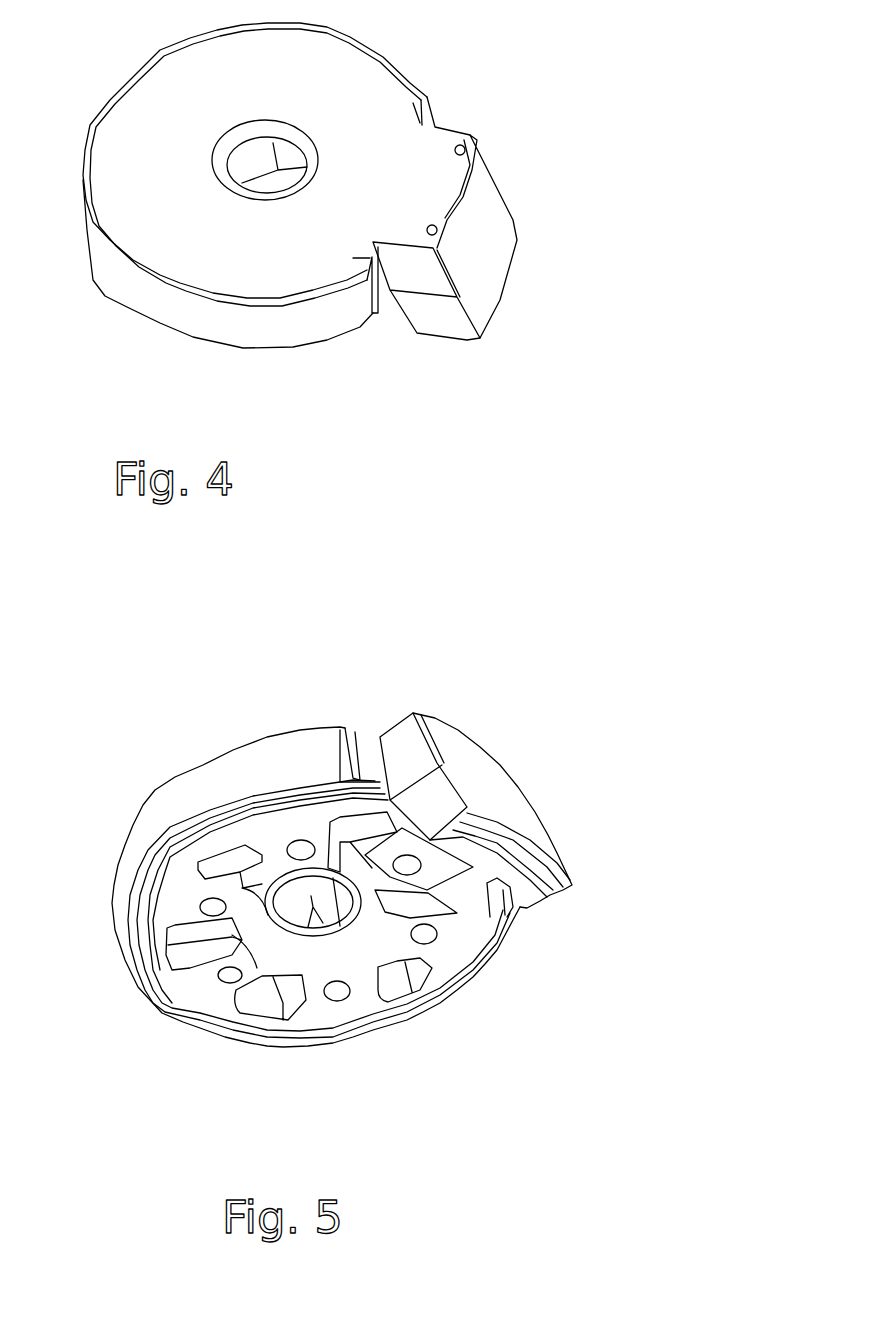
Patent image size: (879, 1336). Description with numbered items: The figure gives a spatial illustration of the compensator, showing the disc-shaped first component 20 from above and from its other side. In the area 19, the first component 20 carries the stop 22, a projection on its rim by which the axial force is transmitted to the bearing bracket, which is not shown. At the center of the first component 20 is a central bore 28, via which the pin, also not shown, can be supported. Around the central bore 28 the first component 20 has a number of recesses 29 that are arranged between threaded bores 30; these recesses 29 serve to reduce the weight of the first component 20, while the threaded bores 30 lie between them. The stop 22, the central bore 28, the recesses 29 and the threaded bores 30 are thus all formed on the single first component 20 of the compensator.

In FIG. 4, the area 19 is at (521, 369).
In FIG. 4, the first component 20 is at (375, 73).
In FIG. 5, the first component 20 is at (448, 948).
In FIG. 4, the stop 22 is at (473, 277).
In FIG. 5, the central bore 28 is at (297, 910).
In FIG. 5, the recesses 29 is at (410, 978).
In FIG. 5, the threaded bores 30 is at (427, 932).